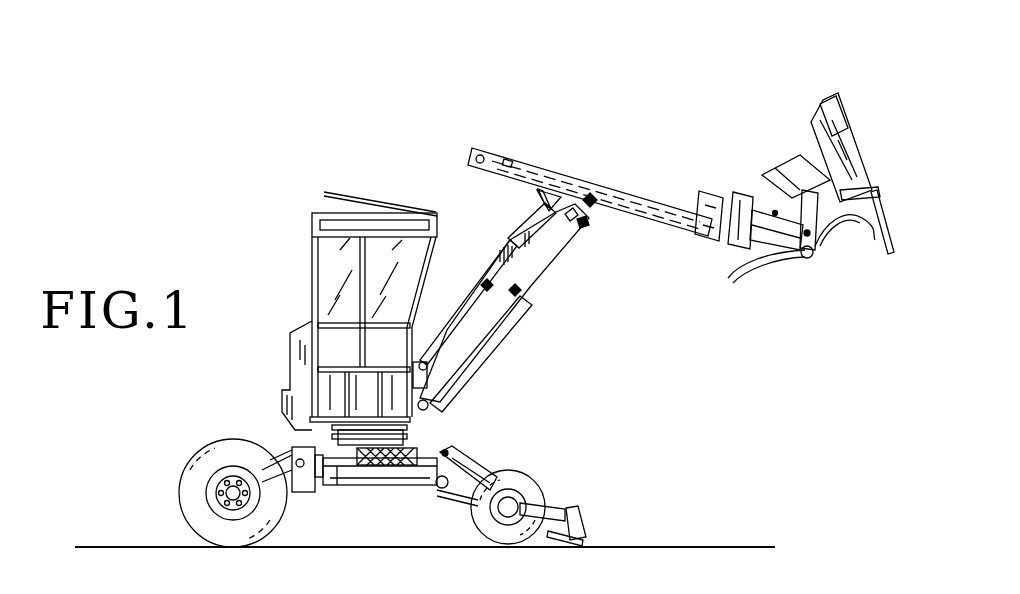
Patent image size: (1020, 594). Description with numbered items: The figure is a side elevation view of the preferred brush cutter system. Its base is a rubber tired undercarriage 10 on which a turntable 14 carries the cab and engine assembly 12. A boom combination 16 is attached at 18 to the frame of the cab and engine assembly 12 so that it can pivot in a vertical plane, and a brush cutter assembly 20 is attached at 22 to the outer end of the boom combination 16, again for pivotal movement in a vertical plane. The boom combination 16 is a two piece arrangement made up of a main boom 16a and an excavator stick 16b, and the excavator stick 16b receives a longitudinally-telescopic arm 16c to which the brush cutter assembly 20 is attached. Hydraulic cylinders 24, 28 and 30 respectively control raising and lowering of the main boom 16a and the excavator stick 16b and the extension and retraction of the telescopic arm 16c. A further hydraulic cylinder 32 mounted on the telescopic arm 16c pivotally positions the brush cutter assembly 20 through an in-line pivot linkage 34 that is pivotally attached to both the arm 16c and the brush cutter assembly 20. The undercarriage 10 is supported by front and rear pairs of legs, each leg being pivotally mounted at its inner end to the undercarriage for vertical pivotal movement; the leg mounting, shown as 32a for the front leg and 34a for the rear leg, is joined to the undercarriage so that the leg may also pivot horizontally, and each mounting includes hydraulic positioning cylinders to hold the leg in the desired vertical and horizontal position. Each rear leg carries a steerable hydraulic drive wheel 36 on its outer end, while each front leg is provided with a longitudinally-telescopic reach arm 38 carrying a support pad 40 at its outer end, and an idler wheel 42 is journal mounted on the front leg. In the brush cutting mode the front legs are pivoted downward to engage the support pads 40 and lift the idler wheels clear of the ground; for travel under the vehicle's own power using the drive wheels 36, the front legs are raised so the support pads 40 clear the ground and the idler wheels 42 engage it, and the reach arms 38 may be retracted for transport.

The rubber tired undercarriage 10 is at (384, 518).
The cab and engine assembly 12 is at (315, 272).
The turntable 14 is at (408, 437).
The boom combination 16 is at (590, 226).
The main boom 16a is at (535, 285).
The excavator stick 16b is at (618, 188).
The longitudinally-telescopic arm 16c is at (766, 244).
The boom attachment 18 is at (426, 355).
The brush cutter assembly 20 is at (831, 88).
The brush cutter attachment 22 is at (812, 264).
The hydraulic cylinder 24 is at (460, 368).
The hydraulic cylinder 28 is at (515, 237).
The hydraulic cylinder 30 is at (508, 160).
The hydraulic cylinder 32 is at (700, 193).
The front leg mounting 32a is at (436, 497).
The in-line pivot linkage 34 is at (775, 213).
The rear leg mounting 34a is at (310, 492).
The steerable hydraulic drive wheel 36 is at (225, 440).
The longitudinally-telescopic reach arm 38 is at (555, 508).
The support pad 40 is at (584, 534).
The idler wheel 42 is at (520, 472).